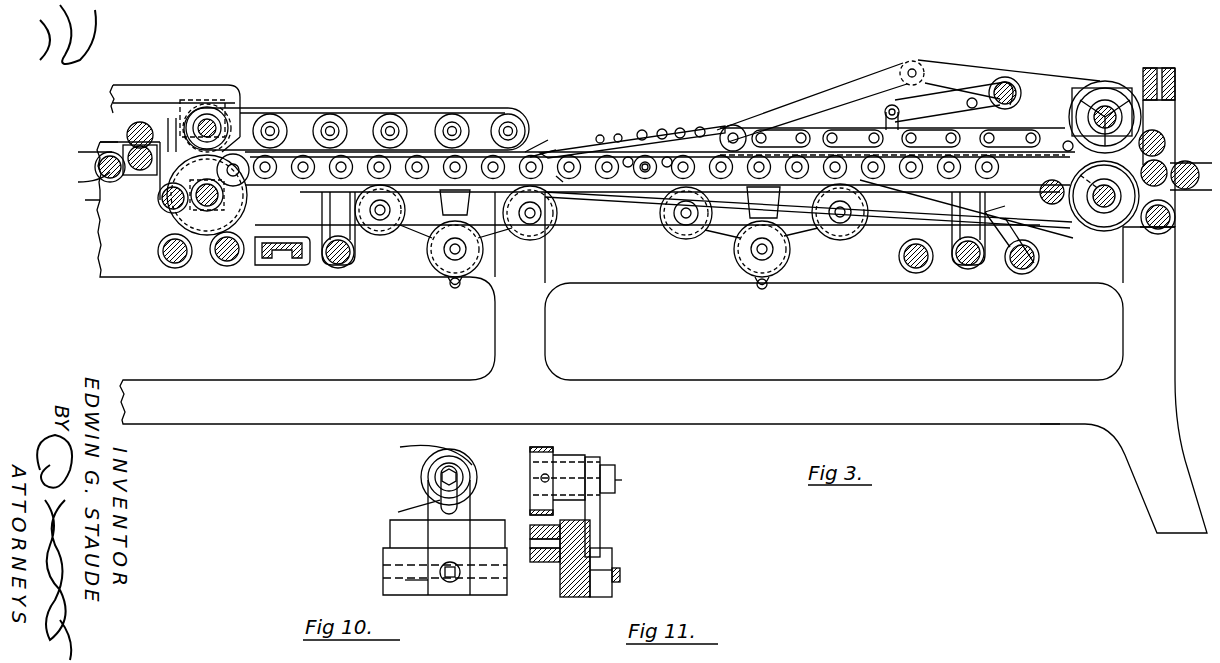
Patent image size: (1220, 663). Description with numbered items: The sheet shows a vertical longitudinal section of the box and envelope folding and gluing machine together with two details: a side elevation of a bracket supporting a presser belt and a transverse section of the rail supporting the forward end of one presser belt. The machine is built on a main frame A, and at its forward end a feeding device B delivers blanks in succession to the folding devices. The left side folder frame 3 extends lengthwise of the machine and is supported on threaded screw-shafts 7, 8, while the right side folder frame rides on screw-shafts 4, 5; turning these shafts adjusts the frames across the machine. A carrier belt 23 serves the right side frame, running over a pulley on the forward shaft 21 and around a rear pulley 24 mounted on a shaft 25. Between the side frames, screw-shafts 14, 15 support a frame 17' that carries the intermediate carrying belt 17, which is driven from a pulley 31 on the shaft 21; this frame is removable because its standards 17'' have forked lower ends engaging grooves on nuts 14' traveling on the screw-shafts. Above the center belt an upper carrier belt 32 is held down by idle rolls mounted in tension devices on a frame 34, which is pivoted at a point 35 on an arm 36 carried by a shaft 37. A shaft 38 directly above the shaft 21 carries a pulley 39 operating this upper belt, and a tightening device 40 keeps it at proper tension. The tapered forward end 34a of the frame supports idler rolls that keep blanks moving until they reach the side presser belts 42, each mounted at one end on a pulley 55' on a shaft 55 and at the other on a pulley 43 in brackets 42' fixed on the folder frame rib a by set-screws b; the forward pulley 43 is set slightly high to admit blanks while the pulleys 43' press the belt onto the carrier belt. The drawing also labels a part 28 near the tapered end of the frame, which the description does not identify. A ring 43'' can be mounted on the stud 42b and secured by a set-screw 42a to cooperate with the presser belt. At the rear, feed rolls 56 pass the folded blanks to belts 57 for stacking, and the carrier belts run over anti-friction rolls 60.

In FIG. 10, the left side folder frame 3 is at (490, 592).
In FIG. 11, the left side folder frame 3 is at (570, 596).
In FIG. 3, the threaded screw-shaft 4 is at (1025, 264).
In FIG. 3, the threaded screw-shaft 5 is at (227, 252).
In FIG. 3, the threaded screw-shaft 7 is at (915, 263).
In FIG. 3, the threaded screw-shaft 8 is at (175, 254).
In FIG. 3, the screw-shaft 14 is at (981, 251).
In FIG. 3, the nut 14' is at (652, 283).
In FIG. 3, the screw-shaft 15 is at (340, 262).
In FIG. 3, the intermediate carrying belt 17 is at (608, 182).
In FIG. 3, the frame 17' is at (578, 201).
In FIG. 3, the standards 17'' is at (656, 263).
In FIG. 3, the shaft 21 is at (1100, 208).
In FIG. 3, the belt 23 is at (902, 212).
In FIG. 11, the belt 23 is at (532, 540).
In FIG. 3, the pulley 24 is at (206, 222).
In FIG. 3, the shaft 25 is at (203, 198).
In FIG. 3, the feed plate 28 is at (636, 130).
In FIG. 3, the pulley 31 is at (1085, 217).
In FIG. 3, the upper carrier belt 32 is at (852, 78).
In FIG. 3, the frame 34 is at (822, 128).
In FIG. 3, the forward end of frame 34 34a is at (590, 147).
In FIG. 3, the pivot point 35 is at (890, 108).
In FIG. 3, the arm 36 is at (912, 60).
In FIG. 3, the shaft 37 is at (1008, 88).
In FIG. 3, the shaft 38 is at (1108, 110).
In FIG. 3, the pulley 39 is at (1090, 94).
In FIG. 3, the tightening device 40 is at (920, 72).
In FIG. 3, the side presser belt 42 is at (356, 102).
In FIG. 11, the side presser belt 42 is at (574, 463).
In FIG. 3, the bracket 42' is at (563, 110).
In FIG. 10, the bracket 42' is at (416, 530).
In FIG. 11, the bracket 42' is at (624, 507).
In FIG. 11, the set-screw 42a is at (546, 480).
In FIG. 11, the stud 42b is at (620, 480).
In FIG. 3, the pulley 43 is at (522, 100).
In FIG. 3, the pulley 43' is at (416, 107).
In FIG. 10, the pulley 43' is at (412, 477).
In FIG. 11, the ring 43'' is at (514, 474).
In FIG. 3, the shaft 55 is at (241, 106).
In FIG. 3, the pulley 55' is at (214, 91).
In FIG. 3, the feed rolls 56 is at (135, 134).
In FIG. 3, the belts 57 is at (95, 167).
In FIG. 3, the anti-friction rolls 60 is at (648, 173).
In FIG. 11, the anti-friction rolls 60 is at (540, 567).
In FIG. 3, the main frame A is at (1047, 420).
In FIG. 3, the feeding device B is at (1180, 158).
In FIG. 10, the rib a is at (412, 582).
In FIG. 11, the rib a is at (590, 575).
In FIG. 10, the set-screw b is at (450, 580).
In FIG. 11, the set-screw b is at (620, 574).